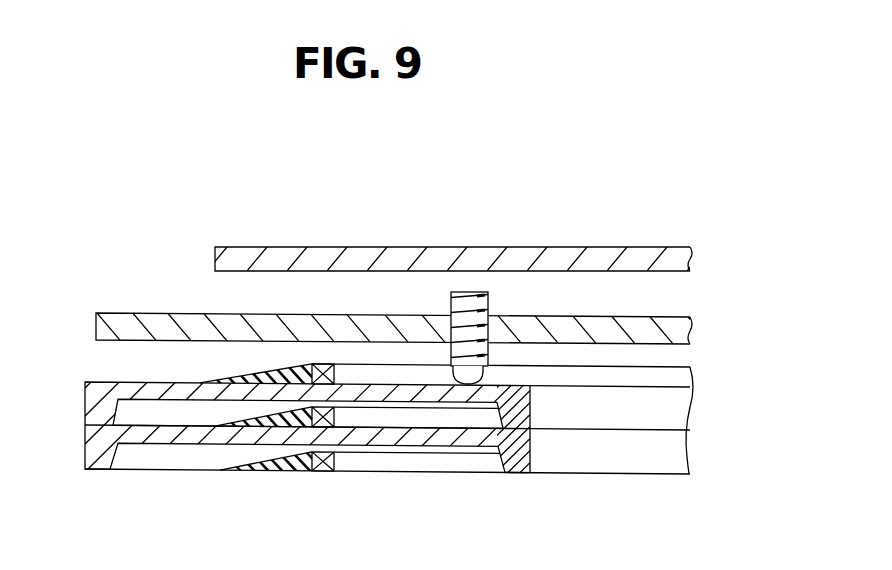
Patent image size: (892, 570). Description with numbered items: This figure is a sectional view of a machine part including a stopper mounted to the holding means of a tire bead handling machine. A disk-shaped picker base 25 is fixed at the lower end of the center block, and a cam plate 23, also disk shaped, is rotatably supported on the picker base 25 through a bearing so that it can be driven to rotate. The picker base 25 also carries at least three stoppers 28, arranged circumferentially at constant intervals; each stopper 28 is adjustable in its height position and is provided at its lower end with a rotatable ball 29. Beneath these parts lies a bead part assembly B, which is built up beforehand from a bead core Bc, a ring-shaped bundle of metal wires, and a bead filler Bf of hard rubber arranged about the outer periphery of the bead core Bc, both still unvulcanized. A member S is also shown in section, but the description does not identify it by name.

The cam plate 23 is at (278, 253).
The picker base 25 is at (133, 325).
The stopper 28 is at (466, 298).
The rotatable ball 29 is at (464, 385).
The bead part assembly B is at (398, 393).
The bead filler Bf is at (263, 388).
The bead core Bc is at (334, 425).
The support member S is at (85, 445).